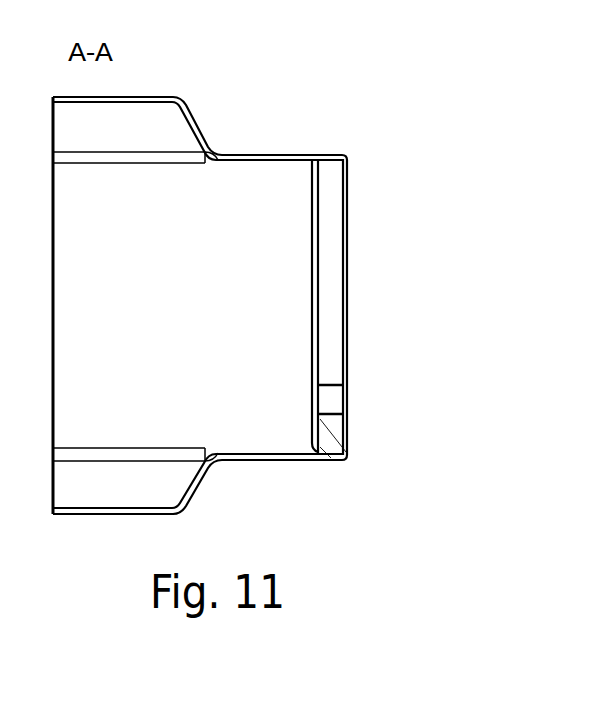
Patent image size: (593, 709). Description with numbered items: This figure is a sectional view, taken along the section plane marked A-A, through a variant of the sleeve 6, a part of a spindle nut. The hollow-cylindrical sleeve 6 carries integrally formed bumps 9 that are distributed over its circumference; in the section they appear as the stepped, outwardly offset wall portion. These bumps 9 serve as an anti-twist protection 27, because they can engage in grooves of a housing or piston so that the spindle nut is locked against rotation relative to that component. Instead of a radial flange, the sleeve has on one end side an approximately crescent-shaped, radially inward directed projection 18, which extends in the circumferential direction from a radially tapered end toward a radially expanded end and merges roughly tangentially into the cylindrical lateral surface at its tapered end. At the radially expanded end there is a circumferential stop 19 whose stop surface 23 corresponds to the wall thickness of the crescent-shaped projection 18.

The bumps 9 is at (151, 272).
The anti-twist protection 27 is at (173, 123).
The sleeve 6 is at (275, 156).
The circumferential stop 19 is at (393, 417).
The stop surface 23 is at (335, 400).
The projection 18 is at (330, 438).